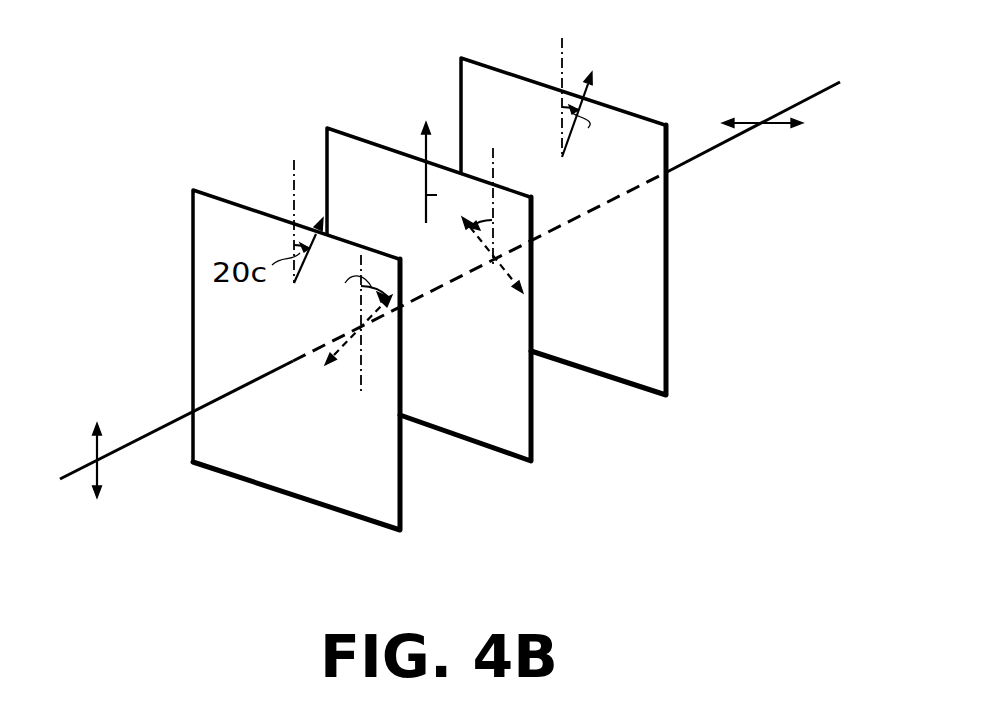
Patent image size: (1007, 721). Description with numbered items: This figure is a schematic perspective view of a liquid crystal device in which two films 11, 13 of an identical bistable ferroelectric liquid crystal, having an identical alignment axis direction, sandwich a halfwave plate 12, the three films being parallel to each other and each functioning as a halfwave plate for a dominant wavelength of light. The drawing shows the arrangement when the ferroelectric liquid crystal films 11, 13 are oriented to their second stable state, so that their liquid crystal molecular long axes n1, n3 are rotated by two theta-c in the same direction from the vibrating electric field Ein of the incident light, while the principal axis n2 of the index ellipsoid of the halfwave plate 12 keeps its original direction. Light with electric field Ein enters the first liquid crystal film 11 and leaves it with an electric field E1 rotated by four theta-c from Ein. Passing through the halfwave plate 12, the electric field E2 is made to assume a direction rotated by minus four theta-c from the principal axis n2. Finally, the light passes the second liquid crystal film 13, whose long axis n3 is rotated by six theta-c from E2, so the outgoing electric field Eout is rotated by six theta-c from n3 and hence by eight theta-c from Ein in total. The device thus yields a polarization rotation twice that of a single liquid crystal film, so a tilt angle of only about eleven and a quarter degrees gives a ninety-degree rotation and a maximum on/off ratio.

The bistable ferroelectric liquid crystal film 11 is at (210, 208).
The halfwave plate 12 is at (360, 160).
The bistable ferroelectric liquid crystal film 13 is at (497, 88).
The liquid crystal molecular long axis direction n1 is at (322, 216).
The principal axis direction of the halfwave plate n2 is at (426, 122).
The liquid crystal molecular long axis direction n3 is at (592, 72).
The electric field of light having passed the first liquid crystal film E1 is at (343, 352).
The electric field of light having passed the halfwave plate E2 is at (498, 275).
The vibrating electric field of the incident light Ein is at (92, 477).
The electric field of the outgoing light Eout is at (768, 128).